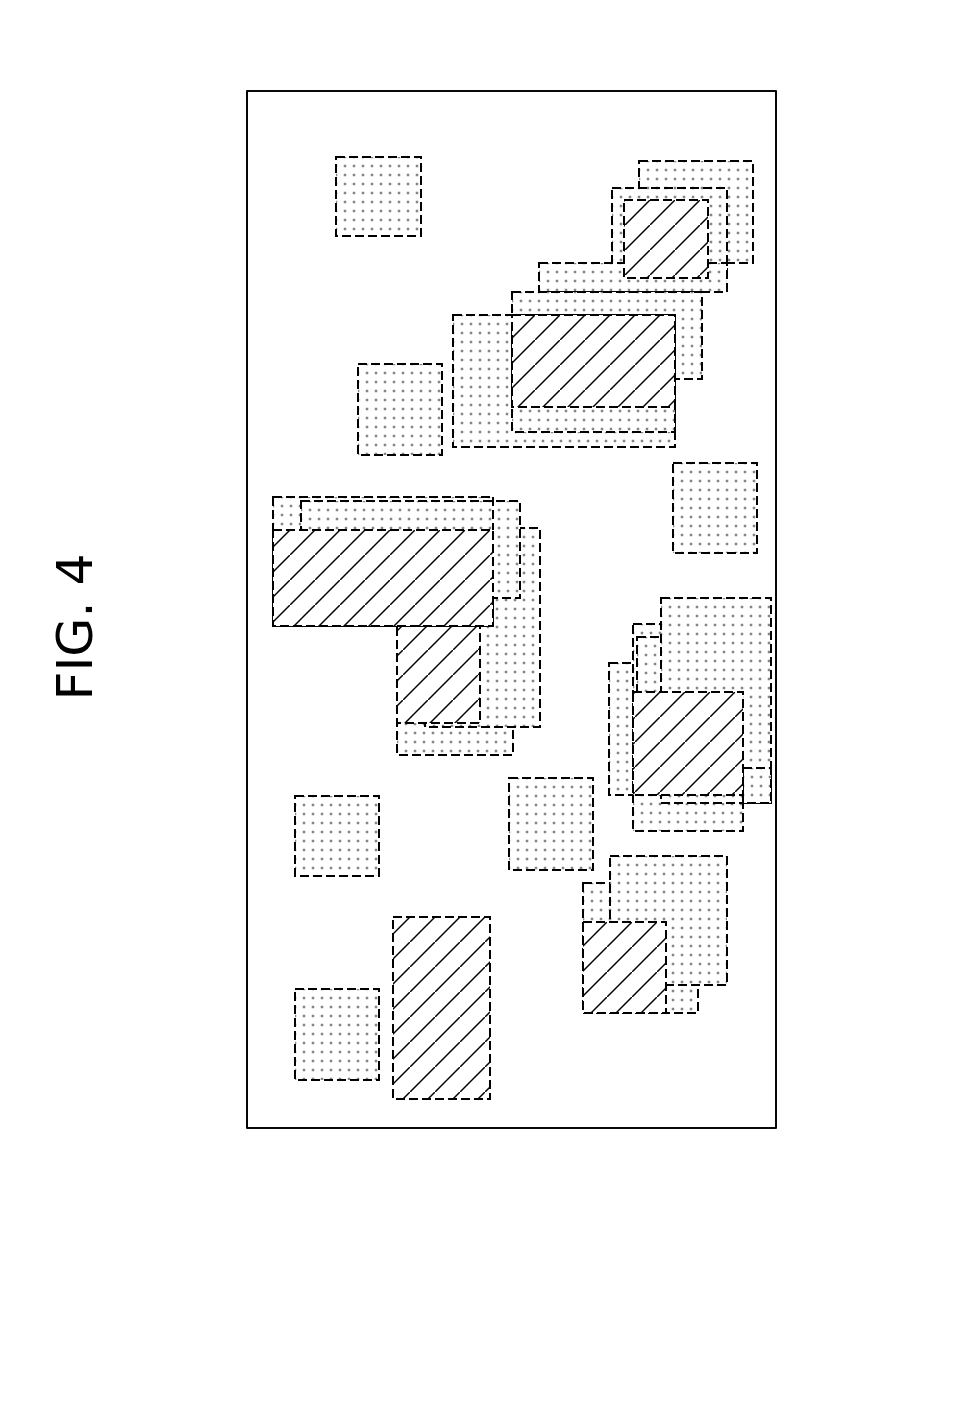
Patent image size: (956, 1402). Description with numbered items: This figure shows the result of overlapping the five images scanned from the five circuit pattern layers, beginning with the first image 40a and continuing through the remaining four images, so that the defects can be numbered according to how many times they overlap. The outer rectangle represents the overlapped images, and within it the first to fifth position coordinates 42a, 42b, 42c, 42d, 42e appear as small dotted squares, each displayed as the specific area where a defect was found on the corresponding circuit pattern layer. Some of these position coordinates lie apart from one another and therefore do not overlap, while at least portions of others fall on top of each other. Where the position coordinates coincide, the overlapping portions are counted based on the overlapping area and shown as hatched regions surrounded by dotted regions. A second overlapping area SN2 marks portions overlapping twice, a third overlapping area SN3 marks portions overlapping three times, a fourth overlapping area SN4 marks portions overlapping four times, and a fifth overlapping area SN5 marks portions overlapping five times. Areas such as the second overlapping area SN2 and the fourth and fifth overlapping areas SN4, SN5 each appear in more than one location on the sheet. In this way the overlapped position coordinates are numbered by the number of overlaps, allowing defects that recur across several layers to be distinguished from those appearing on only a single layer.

The first image 40a is at (536, 1116).
The first position coordinates 42a is at (377, 160).
The second position coordinates 42b is at (297, 836).
The third position coordinates 42c is at (330, 1071).
The fourth position coordinates 42d is at (730, 513).
The fifth position coordinates 42e is at (367, 405).
The second overlapping area SN2 is at (451, 1090).
The third overlapping area SN3 is at (730, 723).
The fourth overlapping area SN4 is at (695, 230).
The fifth overlapping area SN5 is at (657, 395).